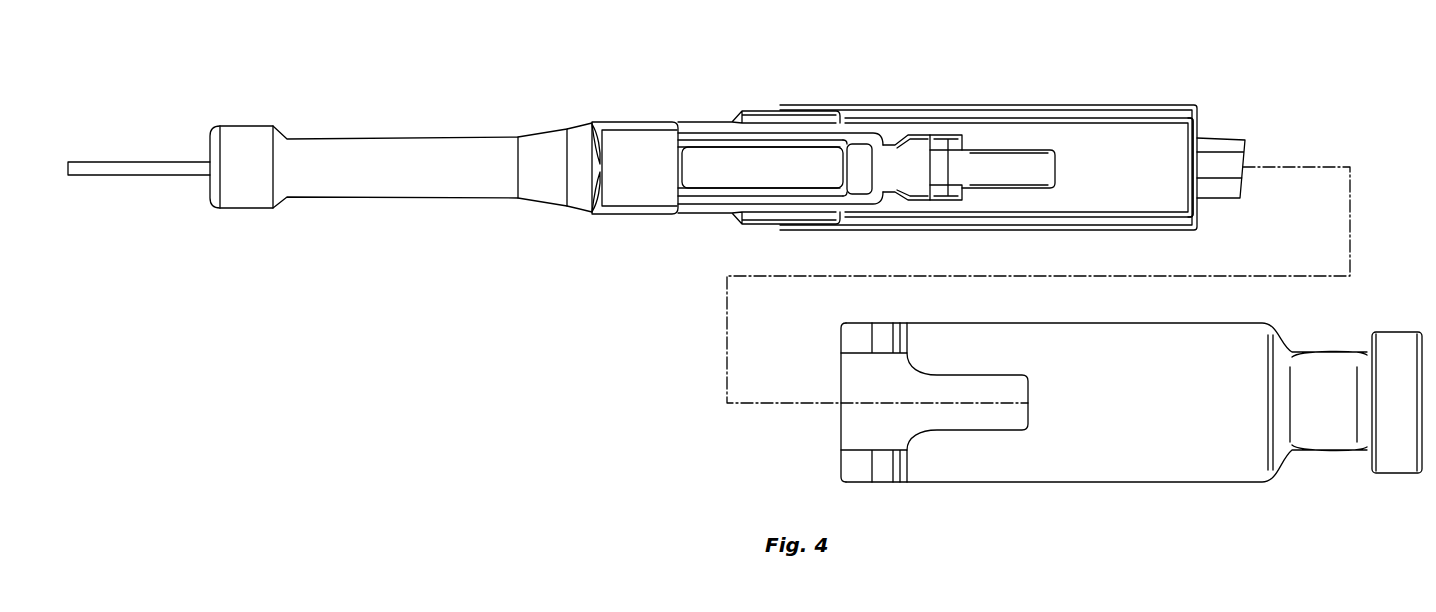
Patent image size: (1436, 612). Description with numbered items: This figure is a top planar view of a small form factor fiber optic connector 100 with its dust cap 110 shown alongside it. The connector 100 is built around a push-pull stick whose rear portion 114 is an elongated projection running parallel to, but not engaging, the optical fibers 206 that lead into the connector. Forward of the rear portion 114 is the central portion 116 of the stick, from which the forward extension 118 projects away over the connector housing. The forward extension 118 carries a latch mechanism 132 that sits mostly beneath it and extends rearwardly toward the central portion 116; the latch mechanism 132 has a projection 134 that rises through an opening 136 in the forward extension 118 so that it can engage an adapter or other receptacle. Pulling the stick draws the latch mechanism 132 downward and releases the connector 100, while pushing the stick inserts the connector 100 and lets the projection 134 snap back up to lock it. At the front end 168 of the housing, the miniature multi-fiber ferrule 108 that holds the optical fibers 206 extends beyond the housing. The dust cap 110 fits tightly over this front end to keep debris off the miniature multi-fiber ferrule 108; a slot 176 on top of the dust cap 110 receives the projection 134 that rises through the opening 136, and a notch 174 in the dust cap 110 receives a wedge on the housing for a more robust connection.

The fiber optic connector 100 is at (812, 78).
The miniature multi-fiber ferrule 108 is at (1245, 175).
The dust cap 110 is at (1422, 376).
The rear portion 114 is at (348, 103).
The central portion 116 is at (633, 103).
The forward extension 118 is at (1065, 78).
The latch mechanism 132 is at (1043, 180).
The projection 134 is at (920, 137).
The opening 136 is at (947, 200).
The front end 168 is at (1197, 126).
The notch 174 is at (905, 474).
The slot 176 is at (997, 383).
The optical fibers 206 is at (146, 162).